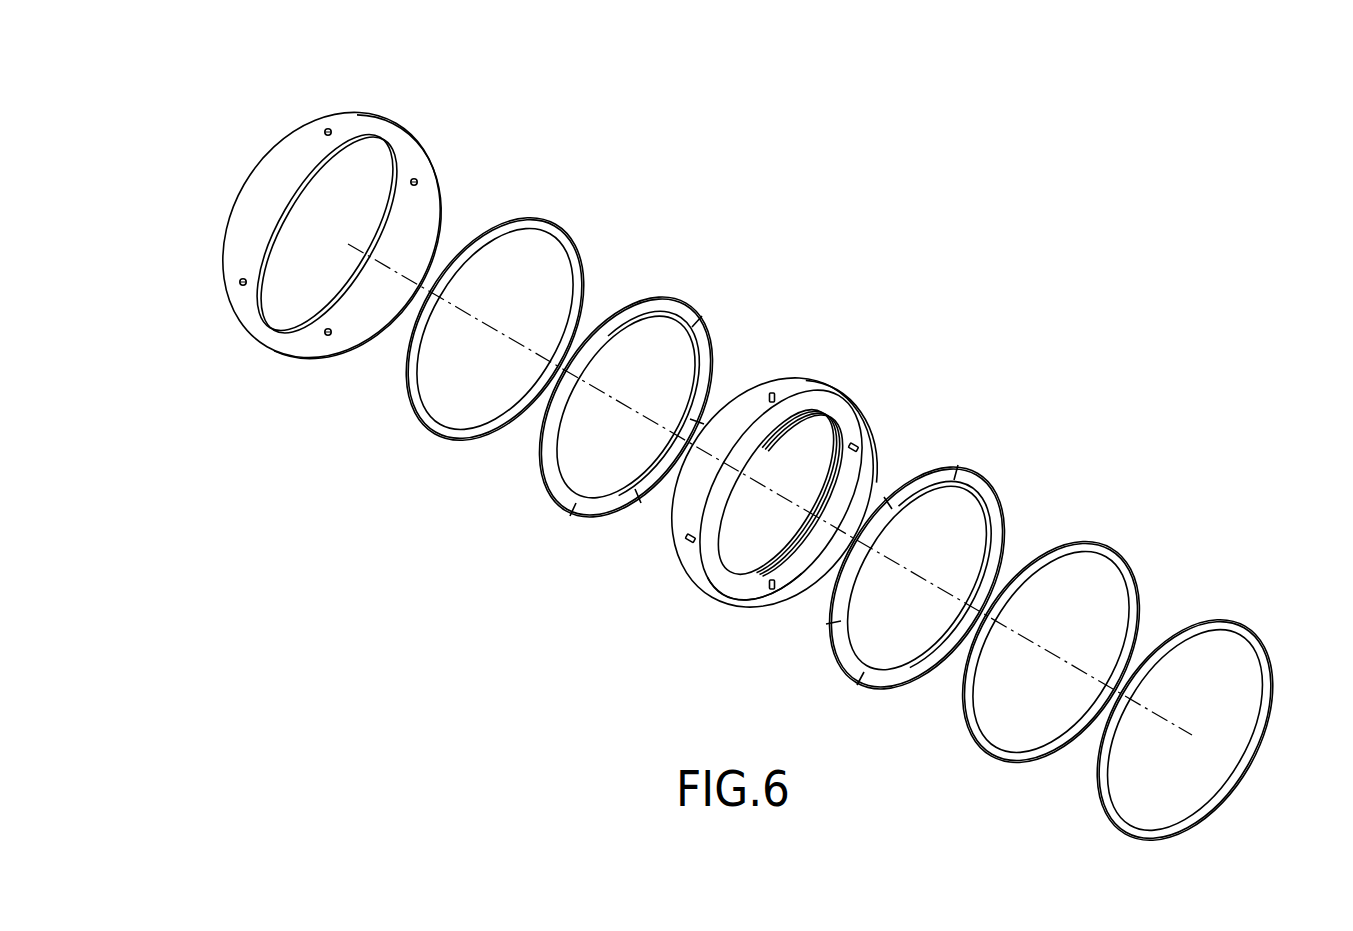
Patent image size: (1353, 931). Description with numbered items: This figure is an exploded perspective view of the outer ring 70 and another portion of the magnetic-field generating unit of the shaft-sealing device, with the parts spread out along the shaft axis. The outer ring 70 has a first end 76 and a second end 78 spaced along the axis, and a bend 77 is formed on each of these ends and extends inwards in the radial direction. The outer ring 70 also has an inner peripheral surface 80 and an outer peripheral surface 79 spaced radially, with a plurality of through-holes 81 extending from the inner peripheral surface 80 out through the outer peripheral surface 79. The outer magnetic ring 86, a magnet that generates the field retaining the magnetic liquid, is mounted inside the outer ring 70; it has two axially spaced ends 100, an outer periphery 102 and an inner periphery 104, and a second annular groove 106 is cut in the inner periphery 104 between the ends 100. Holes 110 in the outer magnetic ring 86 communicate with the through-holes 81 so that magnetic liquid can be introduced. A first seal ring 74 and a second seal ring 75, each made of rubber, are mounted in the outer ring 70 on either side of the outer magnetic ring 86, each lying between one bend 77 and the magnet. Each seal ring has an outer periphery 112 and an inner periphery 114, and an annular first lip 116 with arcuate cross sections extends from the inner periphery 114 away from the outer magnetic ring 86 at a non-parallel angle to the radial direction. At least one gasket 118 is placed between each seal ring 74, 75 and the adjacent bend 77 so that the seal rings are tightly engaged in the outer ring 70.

The outer ring 70 is at (373, 125).
The first seal ring 74 is at (687, 300).
The second seal ring 75 is at (978, 470).
The first end 76 is at (345, 108).
The bend 77 is at (390, 165).
The second end 78 is at (278, 337).
The outer peripheral surface 79 is at (293, 155).
The inner peripheral surface 80 is at (312, 343).
The through-holes 81 is at (245, 282).
The outer magnetic ring 86 is at (810, 385).
The ends 100 is at (858, 427).
The outer periphery 102 is at (697, 573).
The inner periphery 104 is at (748, 592).
The second annular groove 106 is at (840, 493).
The holes 110 is at (773, 395).
The outer periphery 112 is at (548, 492).
The inner periphery 114 is at (578, 502).
The first lip 116 is at (637, 482).
The gasket 118 is at (557, 232).